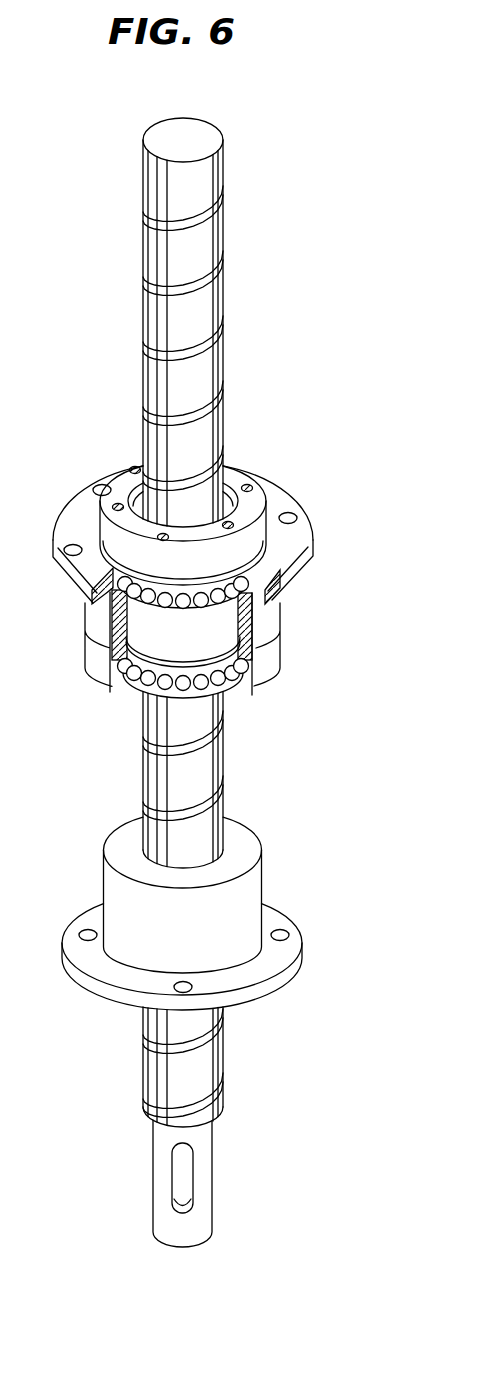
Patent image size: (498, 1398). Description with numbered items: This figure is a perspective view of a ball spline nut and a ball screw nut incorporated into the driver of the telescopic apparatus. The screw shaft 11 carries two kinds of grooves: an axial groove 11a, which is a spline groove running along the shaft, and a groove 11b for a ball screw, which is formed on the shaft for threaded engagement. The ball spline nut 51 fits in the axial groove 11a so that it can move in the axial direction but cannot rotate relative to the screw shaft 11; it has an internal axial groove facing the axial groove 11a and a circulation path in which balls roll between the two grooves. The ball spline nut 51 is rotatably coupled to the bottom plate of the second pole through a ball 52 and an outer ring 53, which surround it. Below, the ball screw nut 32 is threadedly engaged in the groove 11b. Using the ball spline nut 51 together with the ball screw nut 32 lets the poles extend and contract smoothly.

The screw shaft 11 is at (208, 758).
The axial groove 11a is at (166, 261).
The groove for a ball screw 11b is at (200, 290).
The ball spline nut 51 is at (247, 548).
The ball 52 is at (250, 673).
The outer ring 53 is at (267, 620).
The ball screw nut 32 is at (245, 898).